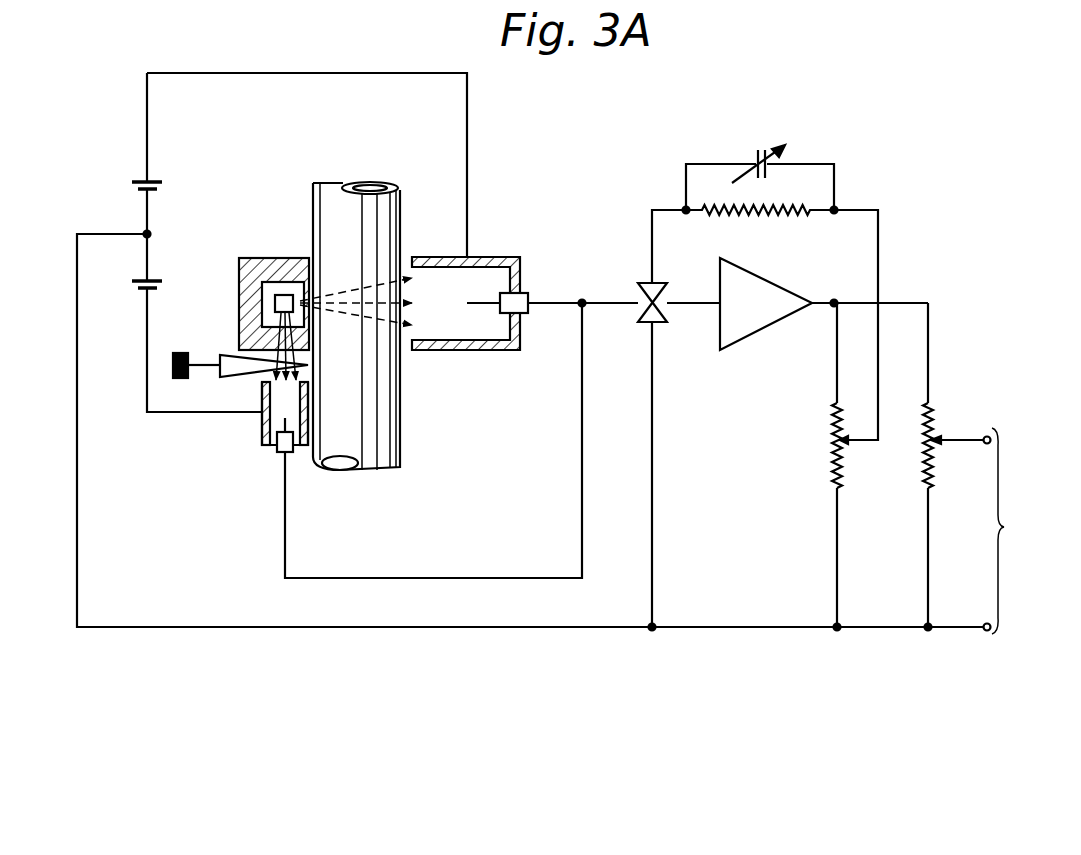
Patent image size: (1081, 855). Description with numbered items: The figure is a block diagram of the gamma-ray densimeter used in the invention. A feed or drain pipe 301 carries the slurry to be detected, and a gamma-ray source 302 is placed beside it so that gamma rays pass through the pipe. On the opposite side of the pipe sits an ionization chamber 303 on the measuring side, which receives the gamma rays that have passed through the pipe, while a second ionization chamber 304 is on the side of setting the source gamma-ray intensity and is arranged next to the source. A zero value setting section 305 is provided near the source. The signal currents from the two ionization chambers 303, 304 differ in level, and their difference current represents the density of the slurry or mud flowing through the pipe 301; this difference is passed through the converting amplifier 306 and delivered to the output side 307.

The tube 301 is at (339, 192).
The ion source 302 is at (285, 295).
The ion collector 303 is at (492, 258).
The electron collector 304 is at (262, 433).
The gas inlet nozzle 305 is at (243, 369).
The amplifier 306 is at (777, 286).
The output terminals 307 is at (941, 468).